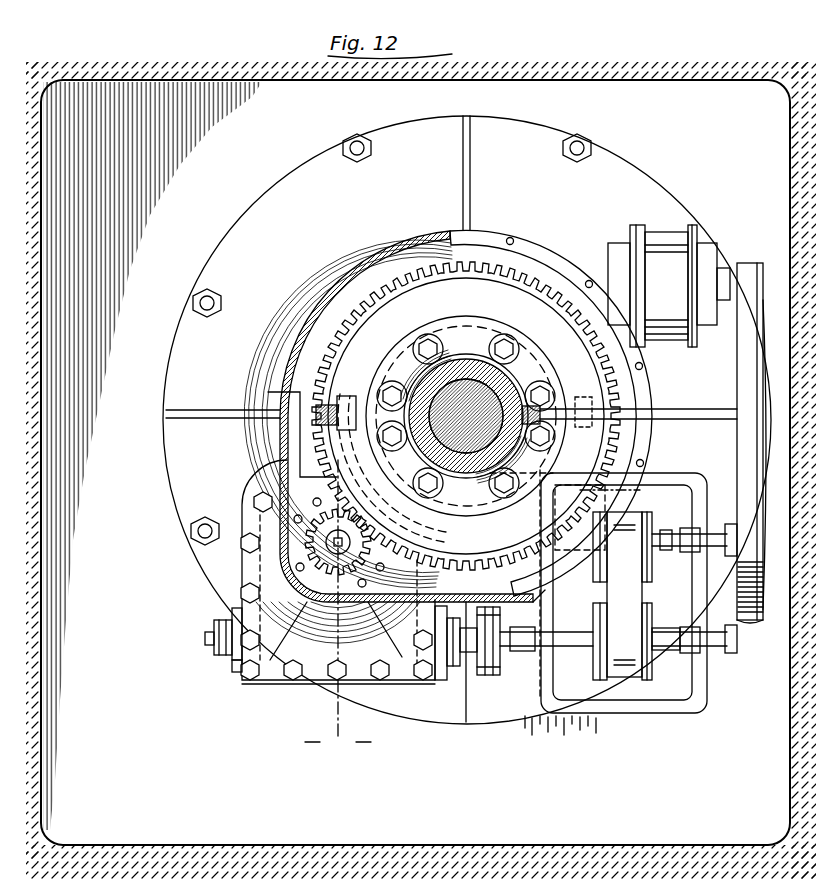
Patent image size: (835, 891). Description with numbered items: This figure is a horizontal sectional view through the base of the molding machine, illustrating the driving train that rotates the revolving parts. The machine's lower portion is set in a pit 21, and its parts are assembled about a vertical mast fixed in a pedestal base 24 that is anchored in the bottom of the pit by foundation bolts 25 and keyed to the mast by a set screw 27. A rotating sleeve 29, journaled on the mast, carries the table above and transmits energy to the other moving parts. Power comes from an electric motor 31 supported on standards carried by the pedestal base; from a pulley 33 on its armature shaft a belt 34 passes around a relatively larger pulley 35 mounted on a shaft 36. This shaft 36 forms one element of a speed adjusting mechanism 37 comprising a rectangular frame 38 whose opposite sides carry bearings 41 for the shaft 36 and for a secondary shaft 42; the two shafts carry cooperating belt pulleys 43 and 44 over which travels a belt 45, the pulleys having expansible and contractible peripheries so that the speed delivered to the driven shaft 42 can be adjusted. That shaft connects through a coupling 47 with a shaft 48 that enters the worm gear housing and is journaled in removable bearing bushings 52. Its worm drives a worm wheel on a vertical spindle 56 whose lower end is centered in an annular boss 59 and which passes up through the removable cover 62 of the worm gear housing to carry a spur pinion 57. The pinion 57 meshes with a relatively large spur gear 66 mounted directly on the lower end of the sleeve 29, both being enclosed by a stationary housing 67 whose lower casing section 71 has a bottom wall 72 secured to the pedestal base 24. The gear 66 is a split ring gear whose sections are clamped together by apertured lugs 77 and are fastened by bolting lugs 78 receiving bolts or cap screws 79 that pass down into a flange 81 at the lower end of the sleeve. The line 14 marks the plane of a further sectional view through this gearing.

The section line 14— 14 is at (256, 395).
The pit 21 is at (42, 733).
The pedestal base 24 is at (636, 166).
The foundation bolts 25 is at (348, 154).
The set screw 27 is at (488, 398).
The rotating sleeve 29 is at (520, 352).
The electric motor 31 is at (656, 236).
The pulley 33 is at (761, 266).
The belt 34 is at (728, 409).
The larger pulley 35 is at (762, 621).
The shaft 36 is at (682, 538).
The speed adjusting mechanism 37 is at (662, 722).
The rectangular frame 38 is at (706, 708).
The bearings 41 is at (727, 526).
The secondary shaft 42 is at (688, 650).
The belt pulley 43 is at (650, 560).
The belt pulley 44 is at (650, 634).
The belt 45 is at (628, 610).
The coupling 47 is at (490, 676).
The shaft 48 is at (455, 666).
The bearing bushings 52 is at (238, 672).
The vertical spindle 56 is at (330, 548).
The spur pinion 57 is at (326, 536).
The annular boss 59 is at (244, 682).
The removable cover 62 is at (262, 682).
The spur gear 66 is at (386, 284).
The stationary housing 67 is at (340, 283).
The lower casing section 71 is at (326, 292).
The bottom wall 72 is at (322, 324).
The apertured lugs 77 is at (337, 413).
The bolting lugs 78 is at (500, 362).
The bolts or cap screws 79 is at (418, 350).
The flange 81 is at (300, 440).